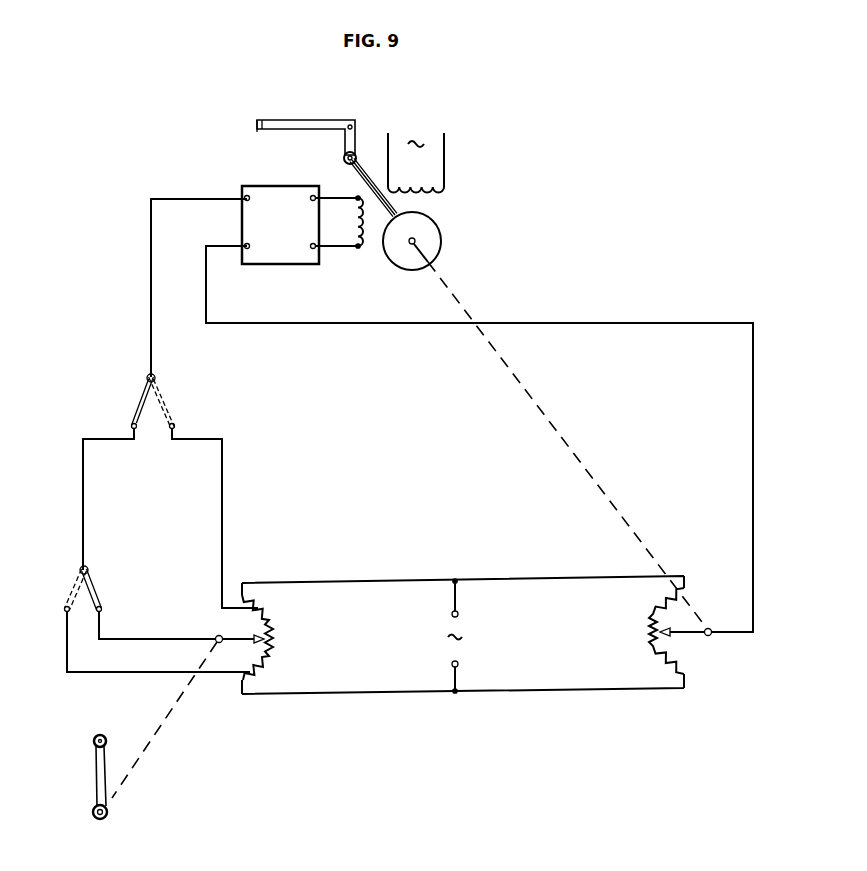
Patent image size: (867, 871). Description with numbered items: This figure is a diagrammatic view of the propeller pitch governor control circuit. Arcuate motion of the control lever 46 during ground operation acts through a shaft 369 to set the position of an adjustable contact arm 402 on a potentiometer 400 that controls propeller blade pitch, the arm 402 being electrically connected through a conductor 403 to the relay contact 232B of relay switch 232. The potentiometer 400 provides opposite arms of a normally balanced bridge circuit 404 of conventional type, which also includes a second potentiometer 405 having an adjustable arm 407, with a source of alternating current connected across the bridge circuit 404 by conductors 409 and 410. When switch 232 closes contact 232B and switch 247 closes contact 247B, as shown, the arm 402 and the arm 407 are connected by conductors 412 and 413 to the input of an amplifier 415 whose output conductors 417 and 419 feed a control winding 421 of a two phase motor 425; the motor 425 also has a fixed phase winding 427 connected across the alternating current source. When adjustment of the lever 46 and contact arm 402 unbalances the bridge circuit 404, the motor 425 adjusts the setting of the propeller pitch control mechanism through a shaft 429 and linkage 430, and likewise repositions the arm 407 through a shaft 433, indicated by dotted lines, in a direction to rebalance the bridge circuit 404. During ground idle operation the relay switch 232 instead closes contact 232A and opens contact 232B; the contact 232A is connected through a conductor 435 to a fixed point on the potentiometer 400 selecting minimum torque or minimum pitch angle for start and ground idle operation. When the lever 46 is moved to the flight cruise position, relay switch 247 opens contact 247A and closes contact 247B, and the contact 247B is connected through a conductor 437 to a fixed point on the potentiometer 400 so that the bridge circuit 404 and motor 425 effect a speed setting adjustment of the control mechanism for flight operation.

The control lever 46 is at (96, 776).
The relay switch 232 is at (93, 587).
The relay contact 232A is at (65, 606).
The relay contact 232B is at (104, 609).
The relay switch 247 is at (142, 398).
The relay contact 247A is at (130, 426).
The relay contact 247B is at (176, 425).
The shaft 369 is at (150, 745).
The potentiometer 400 is at (272, 619).
The adjustable contact arm 402 is at (214, 641).
The conductor 403 is at (120, 639).
The bridge circuit 404 is at (376, 699).
The second potentiometer 405 is at (651, 622).
The adjustable arm 407 is at (690, 638).
The conductor 409 is at (458, 675).
The conductor 410 is at (461, 601).
The conductor 412 is at (151, 293).
The conductor 413 is at (324, 324).
The amplifier 415 is at (298, 241).
The output conductor 417 is at (343, 199).
The output conductor 419 is at (343, 247).
The control winding 421 is at (367, 229).
The two phase motor 425 is at (466, 208).
The fixed phase winding 427 is at (418, 185).
The shaft 429 is at (362, 160).
The linkage 430 is at (312, 119).
The shaft 433 is at (560, 426).
The conductor 435 is at (110, 672).
The conductor 437 is at (226, 490).